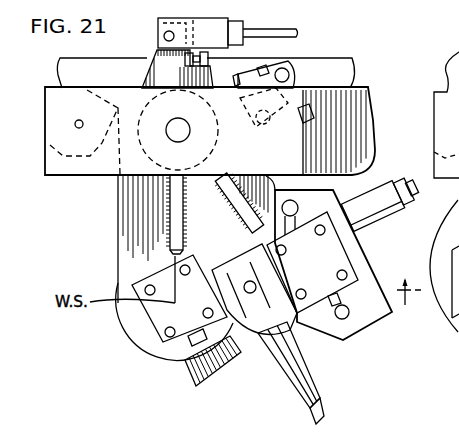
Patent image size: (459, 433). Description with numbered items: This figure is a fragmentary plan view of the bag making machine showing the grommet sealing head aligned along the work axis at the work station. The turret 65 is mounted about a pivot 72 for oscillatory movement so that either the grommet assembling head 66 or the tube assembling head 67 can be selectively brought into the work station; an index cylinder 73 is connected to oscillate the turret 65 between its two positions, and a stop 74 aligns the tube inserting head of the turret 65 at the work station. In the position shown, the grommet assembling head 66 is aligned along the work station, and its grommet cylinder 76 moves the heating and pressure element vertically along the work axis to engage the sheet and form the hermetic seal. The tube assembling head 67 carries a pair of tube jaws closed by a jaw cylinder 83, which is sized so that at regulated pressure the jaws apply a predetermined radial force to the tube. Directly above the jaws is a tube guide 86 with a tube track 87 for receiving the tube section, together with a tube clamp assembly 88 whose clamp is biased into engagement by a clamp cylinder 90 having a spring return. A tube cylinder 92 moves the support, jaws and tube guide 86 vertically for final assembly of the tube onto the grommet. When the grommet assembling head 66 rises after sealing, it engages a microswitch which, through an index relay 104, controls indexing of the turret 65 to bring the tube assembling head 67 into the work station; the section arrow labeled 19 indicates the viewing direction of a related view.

The section line arrow 19 is at (410, 302).
The turret 65 is at (98, 223).
The grommet assembling head 66 is at (147, 356).
The tube assembling head 67 is at (322, 335).
The pivot 72 is at (169, 138).
The index cylinder 73 is at (340, 30).
The stop 74 is at (56, 178).
The grommet cylinder 76 is at (147, 275).
The jaw cylinder 83 is at (415, 200).
The tube guide 86 is at (263, 310).
The tube track 87 is at (248, 284).
The tube clamp assembly 88 is at (287, 382).
The clamp cylinder 90 is at (315, 391).
The tube cylinder 92 is at (346, 251).
The index relay 104 is at (292, 66).